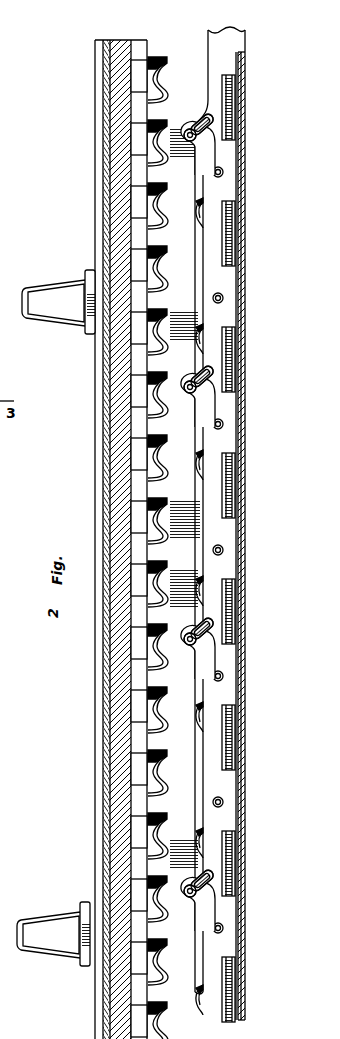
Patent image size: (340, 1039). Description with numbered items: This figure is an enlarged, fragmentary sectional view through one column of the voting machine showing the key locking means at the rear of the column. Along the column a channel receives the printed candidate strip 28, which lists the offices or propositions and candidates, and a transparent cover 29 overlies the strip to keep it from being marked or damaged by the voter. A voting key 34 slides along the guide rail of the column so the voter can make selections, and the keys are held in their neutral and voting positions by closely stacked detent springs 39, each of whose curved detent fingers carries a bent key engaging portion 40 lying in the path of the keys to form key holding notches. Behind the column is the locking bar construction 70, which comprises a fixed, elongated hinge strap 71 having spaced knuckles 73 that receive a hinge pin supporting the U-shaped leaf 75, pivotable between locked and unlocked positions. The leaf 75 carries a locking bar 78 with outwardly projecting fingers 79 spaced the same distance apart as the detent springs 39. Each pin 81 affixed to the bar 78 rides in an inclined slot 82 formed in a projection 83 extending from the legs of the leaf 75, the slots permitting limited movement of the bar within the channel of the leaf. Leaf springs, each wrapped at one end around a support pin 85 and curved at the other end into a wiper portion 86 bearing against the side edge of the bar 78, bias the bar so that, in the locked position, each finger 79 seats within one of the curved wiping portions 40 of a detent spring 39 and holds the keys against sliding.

The candidate strip 28 is at (110, 672).
The transparent cover 29 is at (108, 642).
The voting key 34 is at (55, 283).
The detent spring 39 is at (145, 80).
The key engaging portion 40 is at (164, 58).
The locking bar construction 70 is at (237, 28).
The hinge strap 71 is at (228, 184).
The knuckles 73 is at (230, 110).
The U-shaped leaf 75 is at (216, 32).
The locking bar 78 is at (192, 120).
The fingers 79 is at (152, 203).
The pin 81 is at (197, 140).
The inclined slots 82 is at (214, 126).
The projections 83 is at (212, 372).
The support pin 85 is at (223, 298).
The wiper portion 86 is at (206, 206).